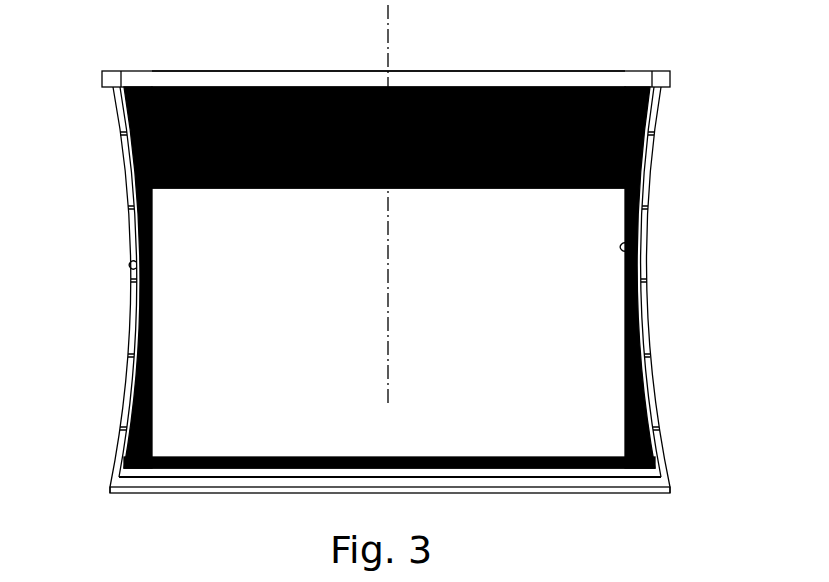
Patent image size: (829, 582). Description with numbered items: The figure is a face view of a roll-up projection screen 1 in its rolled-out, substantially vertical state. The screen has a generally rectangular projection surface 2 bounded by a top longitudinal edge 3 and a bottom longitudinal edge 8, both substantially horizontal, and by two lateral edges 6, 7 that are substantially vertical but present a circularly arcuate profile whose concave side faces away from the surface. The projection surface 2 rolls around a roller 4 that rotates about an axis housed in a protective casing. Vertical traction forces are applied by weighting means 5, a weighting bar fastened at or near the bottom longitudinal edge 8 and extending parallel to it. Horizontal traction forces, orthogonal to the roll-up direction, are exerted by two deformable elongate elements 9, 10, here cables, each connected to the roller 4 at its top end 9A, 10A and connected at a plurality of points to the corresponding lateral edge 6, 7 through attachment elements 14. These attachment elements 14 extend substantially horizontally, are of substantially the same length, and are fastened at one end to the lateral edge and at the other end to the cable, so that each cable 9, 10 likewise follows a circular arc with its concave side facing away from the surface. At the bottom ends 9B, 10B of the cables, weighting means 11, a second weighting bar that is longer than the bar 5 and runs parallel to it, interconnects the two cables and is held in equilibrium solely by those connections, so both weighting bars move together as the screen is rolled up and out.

The roll-up projection screen 1 is at (92, 262).
The projection surface 2 is at (500, 308).
The top longitudinal edge 3 is at (226, 86).
The roller 4 is at (458, 76).
The weighting means 5 is at (305, 470).
The lateral edge 6 is at (140, 265).
The lateral edge 7 is at (625, 237).
The bottom longitudinal edge 8 is at (258, 462).
The deformable elongate element 9 is at (132, 312).
The top end of deformable elongate element 9A is at (119, 80).
The bottom end of deformable elongate element 9B is at (110, 486).
The deformable elongate element 10 is at (645, 312).
The top end of deformable elongate element 10A is at (656, 82).
The bottom end of deformable elongate element 10B is at (670, 487).
The weighting means 11 is at (395, 493).
The attachment elements 14 is at (125, 132).